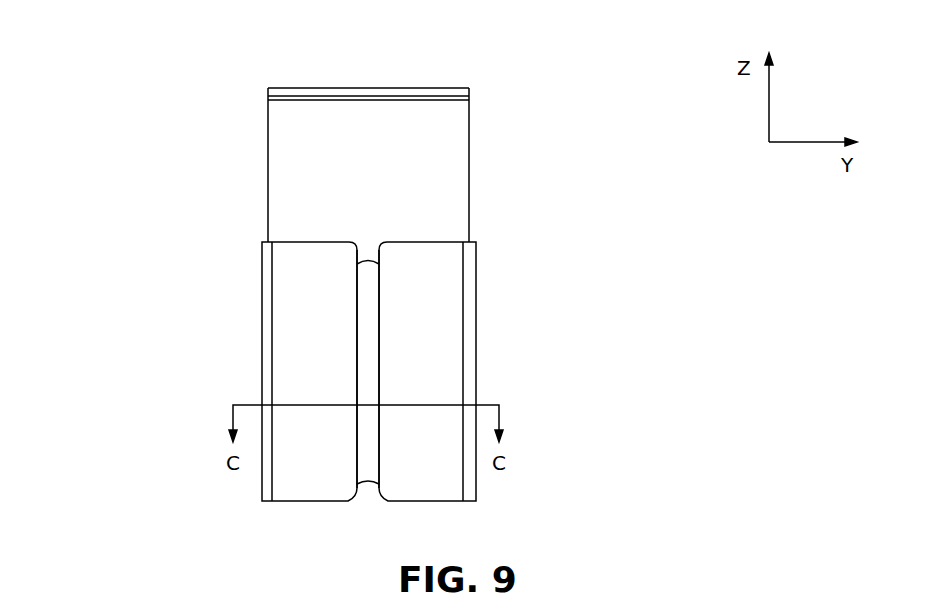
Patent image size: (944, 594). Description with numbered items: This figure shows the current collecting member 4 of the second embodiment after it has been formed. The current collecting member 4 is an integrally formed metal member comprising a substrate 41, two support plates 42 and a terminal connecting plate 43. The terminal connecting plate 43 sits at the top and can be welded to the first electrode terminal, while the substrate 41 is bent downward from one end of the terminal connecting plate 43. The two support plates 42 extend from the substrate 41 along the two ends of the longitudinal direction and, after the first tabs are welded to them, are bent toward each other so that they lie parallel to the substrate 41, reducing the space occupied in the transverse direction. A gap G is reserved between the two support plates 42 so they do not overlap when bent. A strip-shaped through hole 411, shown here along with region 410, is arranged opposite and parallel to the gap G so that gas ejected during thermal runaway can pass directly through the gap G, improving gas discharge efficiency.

The current collecting member 4 is at (130, 103).
The substrate 41 is at (283, 165).
The support plate 42 is at (282, 369).
The terminal connecting plate 43 is at (447, 88).
The slot 410 is at (357, 248).
The through hole 411 is at (369, 276).
The gap G is at (369, 492).